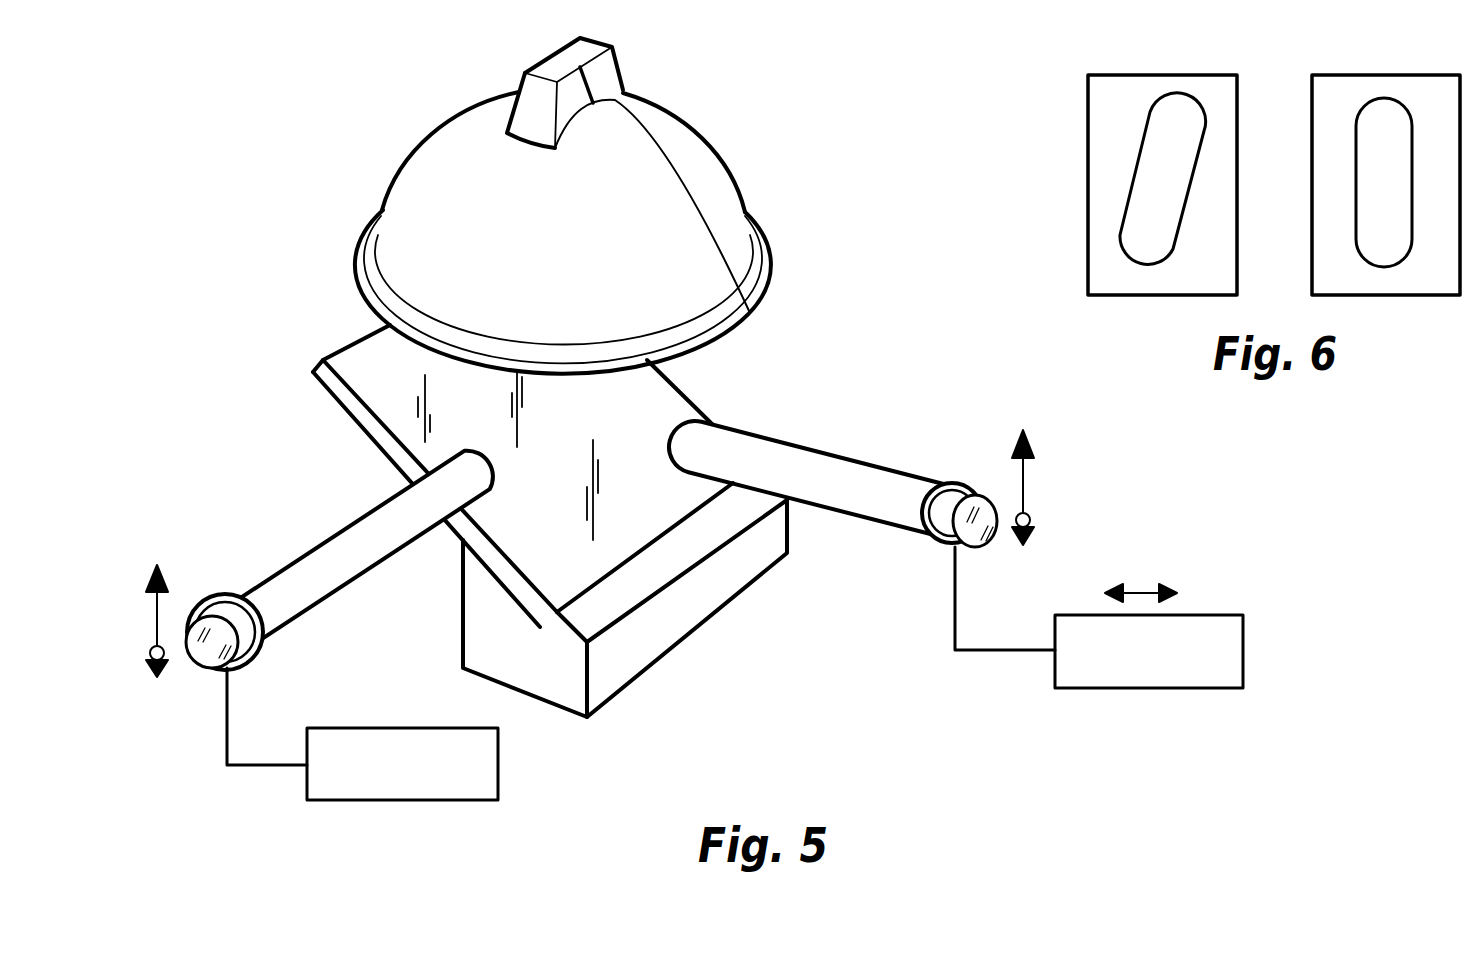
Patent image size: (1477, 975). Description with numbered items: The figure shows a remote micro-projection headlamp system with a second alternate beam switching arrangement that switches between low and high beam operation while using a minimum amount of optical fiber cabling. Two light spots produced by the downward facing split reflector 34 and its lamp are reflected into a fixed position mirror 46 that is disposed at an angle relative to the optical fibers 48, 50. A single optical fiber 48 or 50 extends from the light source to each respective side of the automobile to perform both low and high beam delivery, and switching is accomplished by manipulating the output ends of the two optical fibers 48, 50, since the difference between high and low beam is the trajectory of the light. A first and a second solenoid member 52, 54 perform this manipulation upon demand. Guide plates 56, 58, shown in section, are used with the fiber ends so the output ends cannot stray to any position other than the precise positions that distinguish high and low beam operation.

In FIG. 5, the split reflector 34 is at (430, 159).
In FIG. 5, the fixed position mirror 46 is at (387, 397).
In FIG. 5, the optical fiber 48 is at (318, 547).
In FIG. 5, the optical fiber 50 is at (830, 458).
In FIG. 5, the first solenoid member 52 is at (373, 728).
In FIG. 5, the second solenoid member 54 is at (1233, 615).
In FIG. 6, the guide plate 56 is at (1227, 74).
In FIG. 6, the guide plate 58 is at (1443, 74).